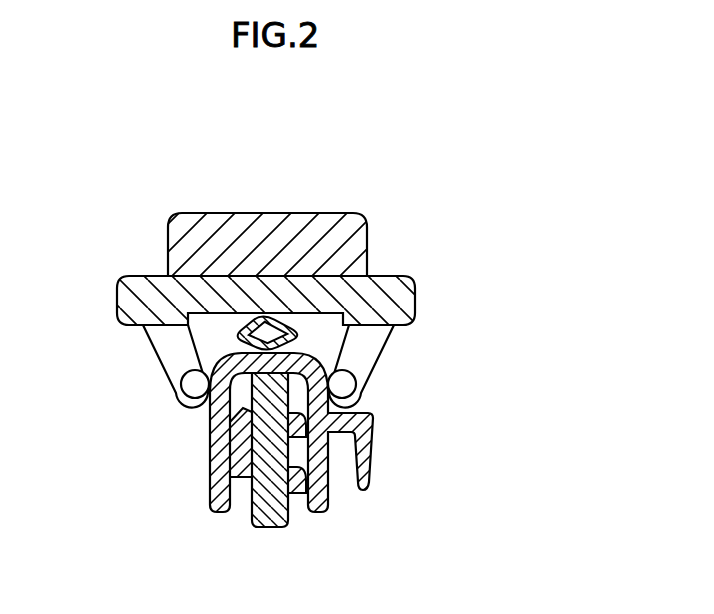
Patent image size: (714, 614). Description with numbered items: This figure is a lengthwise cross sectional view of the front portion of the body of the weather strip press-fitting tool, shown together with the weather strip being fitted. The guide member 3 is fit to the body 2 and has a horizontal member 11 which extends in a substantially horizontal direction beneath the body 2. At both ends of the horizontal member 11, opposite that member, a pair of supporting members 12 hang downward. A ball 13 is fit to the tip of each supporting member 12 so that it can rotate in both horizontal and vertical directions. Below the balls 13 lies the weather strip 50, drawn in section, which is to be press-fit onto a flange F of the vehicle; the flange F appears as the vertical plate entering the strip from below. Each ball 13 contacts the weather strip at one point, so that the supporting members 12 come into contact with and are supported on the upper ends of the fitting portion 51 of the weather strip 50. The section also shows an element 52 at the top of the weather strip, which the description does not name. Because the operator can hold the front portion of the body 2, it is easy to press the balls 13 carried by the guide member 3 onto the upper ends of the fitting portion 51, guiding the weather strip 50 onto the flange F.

The body 2 is at (340, 228).
The guide member 3 is at (427, 176).
The horizontal member 11 is at (403, 302).
The supporting member 12 is at (173, 360).
The ball 13 is at (190, 387).
The weather strip 50 is at (388, 469).
The fitting portion 51 is at (325, 502).
The protrusion 52 is at (240, 313).
The flange F is at (273, 528).